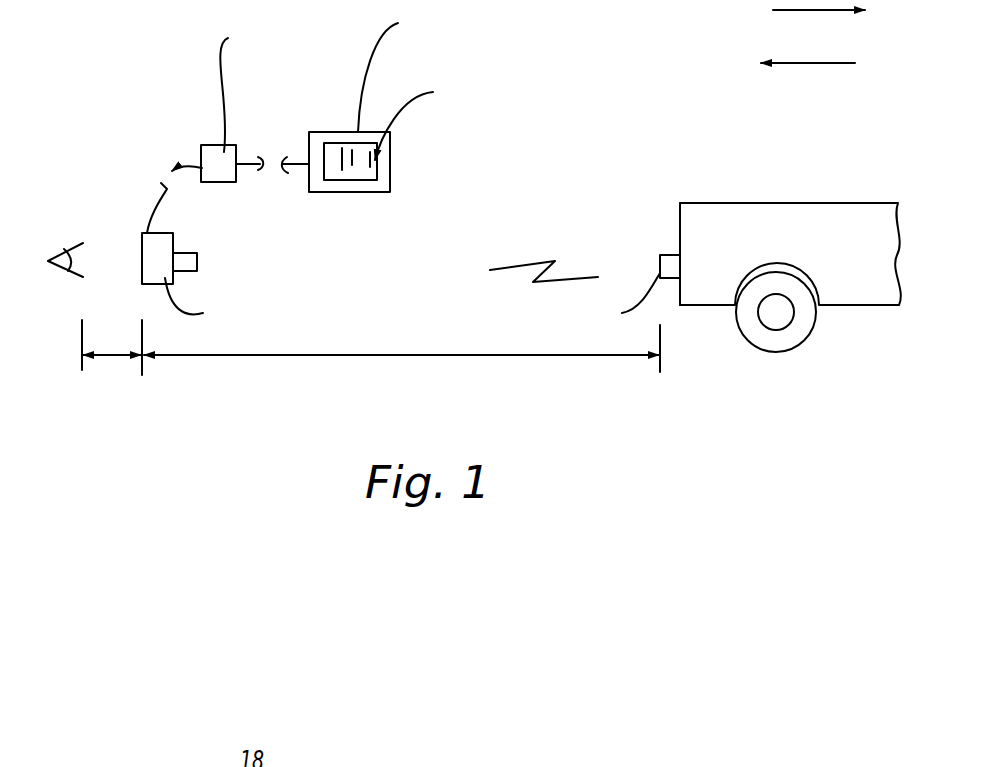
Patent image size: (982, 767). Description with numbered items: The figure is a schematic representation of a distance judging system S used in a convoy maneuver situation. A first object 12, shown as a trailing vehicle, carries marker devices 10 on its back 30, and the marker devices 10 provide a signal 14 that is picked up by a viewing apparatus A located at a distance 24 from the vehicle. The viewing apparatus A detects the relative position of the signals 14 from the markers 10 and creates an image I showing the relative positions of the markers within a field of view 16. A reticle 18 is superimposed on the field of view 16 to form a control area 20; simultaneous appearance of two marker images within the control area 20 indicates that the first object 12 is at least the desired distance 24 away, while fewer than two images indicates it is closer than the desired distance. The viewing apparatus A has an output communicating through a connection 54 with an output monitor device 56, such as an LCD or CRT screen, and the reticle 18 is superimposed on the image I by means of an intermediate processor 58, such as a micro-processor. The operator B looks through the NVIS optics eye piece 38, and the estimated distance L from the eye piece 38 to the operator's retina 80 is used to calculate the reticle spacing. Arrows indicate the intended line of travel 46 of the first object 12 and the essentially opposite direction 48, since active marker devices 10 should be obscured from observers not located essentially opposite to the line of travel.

The marker device 10 is at (660, 258).
The first object 12 is at (743, 215).
The signal 14 is at (525, 265).
The field of view 16 is at (367, 174).
The reticle 18 is at (330, 157).
The control area 20 is at (348, 170).
The distance 24 is at (425, 357).
The back of vehicle 30 is at (678, 215).
The NVIS optics eye piece 38 is at (137, 259).
The intended line of travel 46 is at (800, 14).
The opposite direction 48 is at (827, 64).
The connection 54 is at (247, 163).
The output monitor device 56 is at (395, 170).
The intermediate processor 58 is at (208, 150).
The retina 80 is at (80, 256).
The viewing apparatus A is at (155, 143).
The operator B is at (67, 250).
The distance judging system S is at (562, 82).
The image I is at (367, 155).
The estimated distance of eyepiece to retina L is at (107, 341).